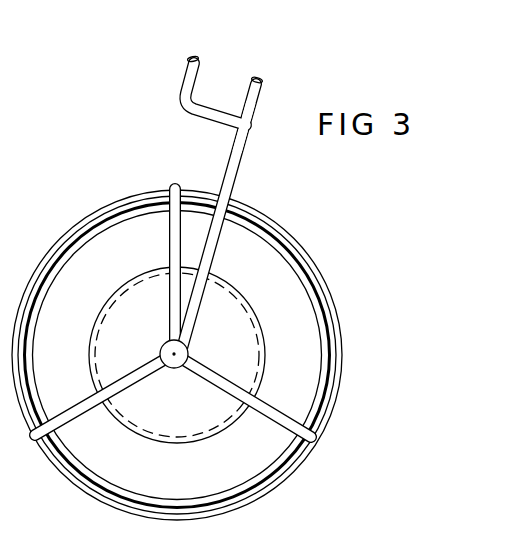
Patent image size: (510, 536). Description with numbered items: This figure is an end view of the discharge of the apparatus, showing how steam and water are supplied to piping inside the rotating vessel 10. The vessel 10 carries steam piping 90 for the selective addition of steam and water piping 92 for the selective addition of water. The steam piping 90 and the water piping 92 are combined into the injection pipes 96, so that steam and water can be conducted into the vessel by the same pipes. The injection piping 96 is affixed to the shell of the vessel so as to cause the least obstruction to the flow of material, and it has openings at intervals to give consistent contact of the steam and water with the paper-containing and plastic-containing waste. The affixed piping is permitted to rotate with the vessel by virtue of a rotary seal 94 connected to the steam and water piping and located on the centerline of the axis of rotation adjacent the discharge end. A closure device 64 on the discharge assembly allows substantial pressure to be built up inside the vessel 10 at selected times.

The vessel 10 is at (212, 477).
The closure device 64 is at (232, 362).
The steam piping 90 is at (190, 55).
The water piping 92 is at (253, 77).
The rotary seal 94 is at (187, 343).
The injection pipes 96 is at (319, 443).